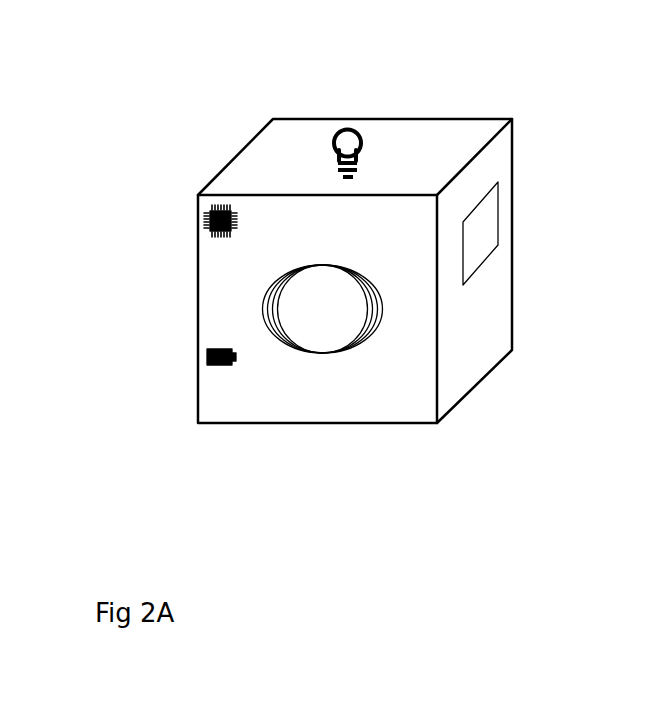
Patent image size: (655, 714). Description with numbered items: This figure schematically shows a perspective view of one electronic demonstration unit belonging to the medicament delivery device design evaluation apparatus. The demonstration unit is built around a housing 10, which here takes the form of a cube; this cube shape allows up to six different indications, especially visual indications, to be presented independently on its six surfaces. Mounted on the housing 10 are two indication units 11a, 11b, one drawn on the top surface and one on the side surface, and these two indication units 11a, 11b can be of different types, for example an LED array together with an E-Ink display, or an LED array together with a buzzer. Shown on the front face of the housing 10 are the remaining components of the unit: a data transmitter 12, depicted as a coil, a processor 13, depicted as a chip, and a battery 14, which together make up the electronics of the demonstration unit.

The housing 10 is at (228, 390).
The indication unit 11a is at (346, 127).
The indication unit 11b is at (498, 222).
The data transmitter 12 is at (262, 296).
The processor 13 is at (207, 223).
The battery 14 is at (207, 355).